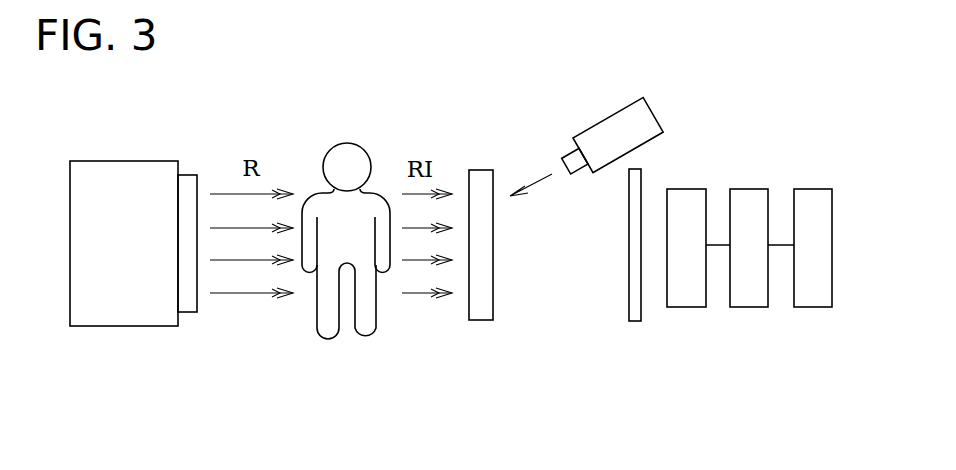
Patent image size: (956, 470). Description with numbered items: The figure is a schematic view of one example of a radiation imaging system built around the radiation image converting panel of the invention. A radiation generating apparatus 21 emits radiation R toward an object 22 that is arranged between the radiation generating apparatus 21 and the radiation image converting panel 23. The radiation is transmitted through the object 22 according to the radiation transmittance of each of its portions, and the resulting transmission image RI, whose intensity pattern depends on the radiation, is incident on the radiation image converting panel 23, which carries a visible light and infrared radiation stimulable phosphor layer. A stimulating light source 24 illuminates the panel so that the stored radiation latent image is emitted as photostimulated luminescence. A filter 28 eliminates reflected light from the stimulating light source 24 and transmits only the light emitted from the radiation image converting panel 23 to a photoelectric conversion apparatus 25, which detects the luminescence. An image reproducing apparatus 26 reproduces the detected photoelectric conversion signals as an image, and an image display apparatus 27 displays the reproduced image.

The radiation generating apparatus 21 is at (127, 326).
The object 22 is at (328, 339).
The radiation image converting panel 23 is at (481, 320).
The stimulating light source 24 is at (647, 105).
The photoelectric conversion apparatus 25 is at (688, 307).
The image reproducing apparatus 26 is at (749, 307).
The image display apparatus 27 is at (812, 307).
The filter 28 is at (633, 321).